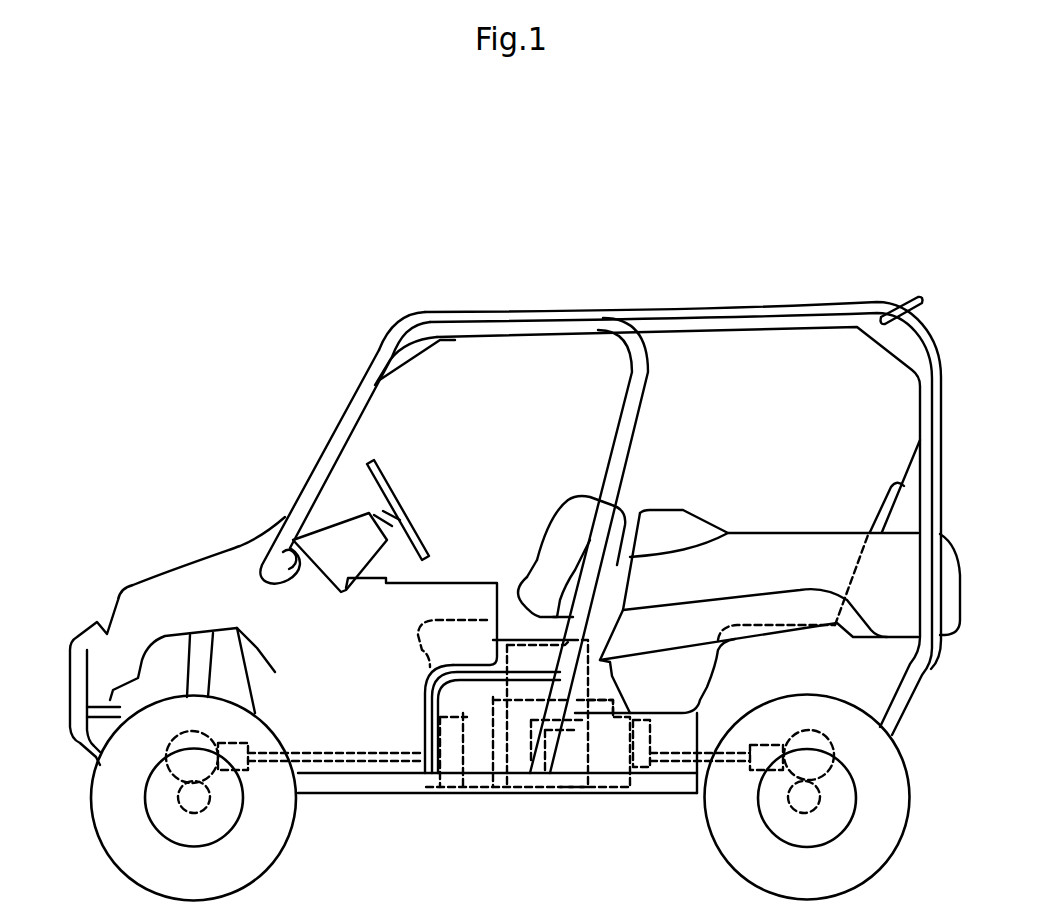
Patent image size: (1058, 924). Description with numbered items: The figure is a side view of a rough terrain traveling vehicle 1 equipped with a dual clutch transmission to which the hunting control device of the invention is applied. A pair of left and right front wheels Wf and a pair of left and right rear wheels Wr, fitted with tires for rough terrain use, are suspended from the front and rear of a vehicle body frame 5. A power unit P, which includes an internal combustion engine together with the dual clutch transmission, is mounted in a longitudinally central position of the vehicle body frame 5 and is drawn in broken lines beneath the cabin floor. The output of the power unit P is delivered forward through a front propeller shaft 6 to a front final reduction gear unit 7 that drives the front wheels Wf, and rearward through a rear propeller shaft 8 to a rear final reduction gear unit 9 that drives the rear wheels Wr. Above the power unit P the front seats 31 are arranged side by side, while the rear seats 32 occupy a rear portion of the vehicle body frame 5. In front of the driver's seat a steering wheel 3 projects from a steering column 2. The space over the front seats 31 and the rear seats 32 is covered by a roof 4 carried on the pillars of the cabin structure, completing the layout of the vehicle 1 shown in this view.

The rough terrain traveling vehicle 1 is at (322, 405).
The steering column 2 is at (350, 517).
The steering wheel 3 is at (400, 493).
The roof 4 is at (684, 305).
The vehicle body frame 5 is at (503, 794).
The front propeller shaft 6 is at (338, 766).
The front final reduction gear unit 7 is at (222, 770).
The rear propeller shaft 8 is at (663, 765).
The rear final reduction gear unit 9 is at (785, 762).
The front seat 31 is at (462, 620).
The rear seat 32 is at (772, 625).
The power unit P is at (529, 793).
The front wheels Wf is at (108, 853).
The rear wheels Wr is at (897, 843).